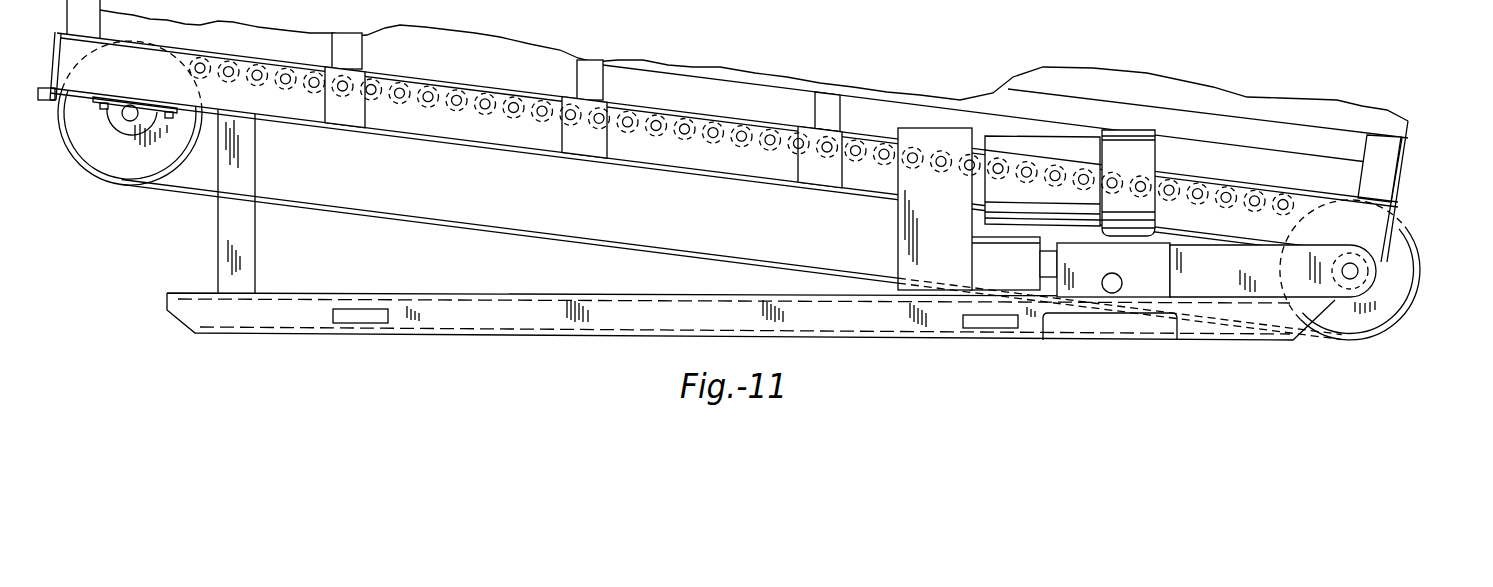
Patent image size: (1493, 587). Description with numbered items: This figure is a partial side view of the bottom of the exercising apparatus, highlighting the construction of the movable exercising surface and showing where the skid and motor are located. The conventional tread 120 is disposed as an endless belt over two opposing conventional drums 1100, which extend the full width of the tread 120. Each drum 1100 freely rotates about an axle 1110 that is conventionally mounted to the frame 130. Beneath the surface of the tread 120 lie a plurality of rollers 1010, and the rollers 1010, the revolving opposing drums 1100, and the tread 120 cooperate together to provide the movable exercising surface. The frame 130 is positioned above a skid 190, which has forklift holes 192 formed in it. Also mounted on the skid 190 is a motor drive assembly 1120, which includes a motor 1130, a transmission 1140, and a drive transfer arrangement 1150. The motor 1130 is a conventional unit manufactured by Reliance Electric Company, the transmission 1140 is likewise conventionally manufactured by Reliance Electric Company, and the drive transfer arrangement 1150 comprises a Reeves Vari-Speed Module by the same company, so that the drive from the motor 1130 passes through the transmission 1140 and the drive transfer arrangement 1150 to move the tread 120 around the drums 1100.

The tread 120 is at (122, 203).
The frame 130 is at (261, 119).
The skid 190 is at (400, 297).
The forklift holes 192 is at (370, 313).
The rollers 1010 is at (455, 101).
The drums 1100 is at (184, 160).
The axle 1110 is at (128, 117).
The motor drive assembly 1120 is at (792, 226).
The motor 1130 is at (1133, 142).
The transmission 1140 is at (950, 148).
The drive transfer arrangement 1150 is at (1217, 278).